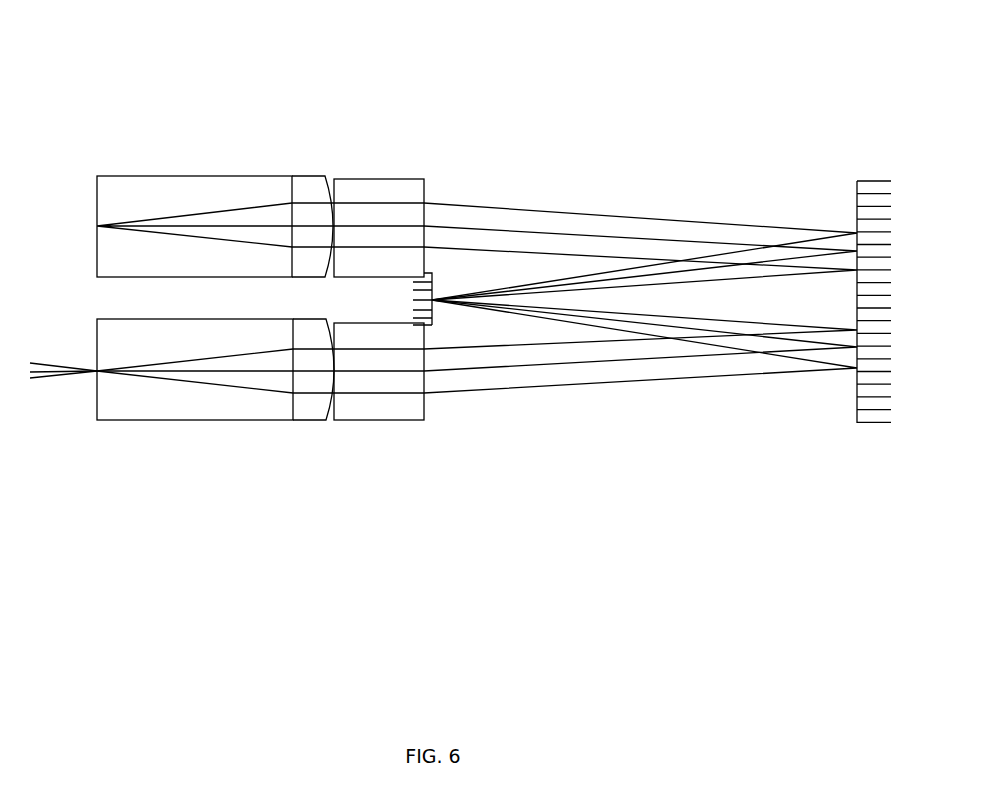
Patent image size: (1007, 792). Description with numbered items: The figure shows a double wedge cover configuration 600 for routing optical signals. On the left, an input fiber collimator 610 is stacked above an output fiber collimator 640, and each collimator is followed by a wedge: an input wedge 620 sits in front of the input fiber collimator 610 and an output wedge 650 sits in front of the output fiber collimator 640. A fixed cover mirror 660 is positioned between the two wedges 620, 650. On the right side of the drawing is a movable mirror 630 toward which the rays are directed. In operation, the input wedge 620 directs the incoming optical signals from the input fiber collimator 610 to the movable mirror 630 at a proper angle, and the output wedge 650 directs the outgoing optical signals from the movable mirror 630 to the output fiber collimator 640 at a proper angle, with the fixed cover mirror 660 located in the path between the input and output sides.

The double wedge cover configuration 600 is at (443, 485).
The input fiber collimator 610 is at (117, 195).
The input wedge 620 is at (395, 195).
The movable mirror 630 is at (855, 187).
The output fiber collimator 640 is at (130, 407).
The output wedge 650 is at (363, 412).
The fixed cover mirror 660 is at (432, 322).